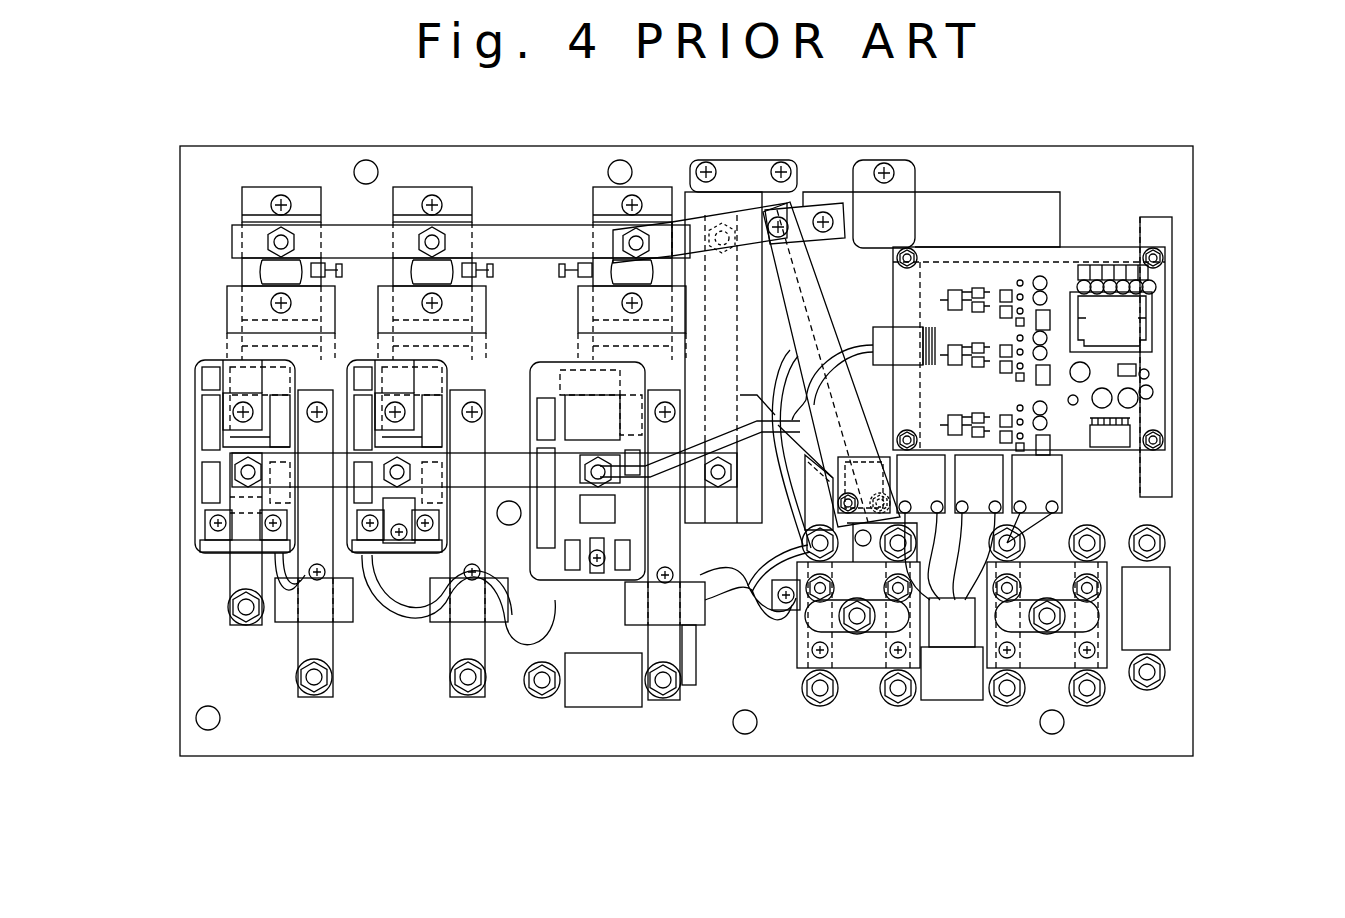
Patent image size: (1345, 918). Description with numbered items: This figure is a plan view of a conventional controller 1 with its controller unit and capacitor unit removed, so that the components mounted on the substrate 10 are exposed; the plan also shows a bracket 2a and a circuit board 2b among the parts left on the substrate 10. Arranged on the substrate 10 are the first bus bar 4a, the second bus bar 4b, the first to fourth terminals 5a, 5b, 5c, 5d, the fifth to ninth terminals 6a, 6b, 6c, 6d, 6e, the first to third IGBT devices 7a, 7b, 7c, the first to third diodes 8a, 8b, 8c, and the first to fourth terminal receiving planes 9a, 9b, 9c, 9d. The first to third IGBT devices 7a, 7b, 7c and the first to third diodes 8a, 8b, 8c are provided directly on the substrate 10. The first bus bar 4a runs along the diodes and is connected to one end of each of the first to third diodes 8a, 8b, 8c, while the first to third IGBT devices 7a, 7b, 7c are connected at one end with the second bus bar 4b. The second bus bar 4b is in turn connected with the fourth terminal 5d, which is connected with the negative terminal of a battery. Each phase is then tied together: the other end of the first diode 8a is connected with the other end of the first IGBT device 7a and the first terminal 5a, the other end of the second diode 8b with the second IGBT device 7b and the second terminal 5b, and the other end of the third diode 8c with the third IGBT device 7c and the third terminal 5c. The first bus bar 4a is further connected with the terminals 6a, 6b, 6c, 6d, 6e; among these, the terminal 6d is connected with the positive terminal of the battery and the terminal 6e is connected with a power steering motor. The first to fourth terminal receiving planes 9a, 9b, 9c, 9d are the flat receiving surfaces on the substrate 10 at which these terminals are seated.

The power distribution unit 1 is at (1240, 298).
The substrate 10 is at (1085, 178).
The mounting bracket 2a is at (877, 274).
The printed circuit board 2b is at (1095, 353).
The first bus bar 4a is at (235, 248).
The second bus bar 4b is at (236, 478).
The first terminal 5a is at (314, 697).
The second terminal 5b is at (468, 697).
The third terminal 5c is at (542, 700).
The fourth terminal 5d is at (247, 625).
The fifth terminal 6a is at (820, 700).
The sixth terminal 6b is at (898, 700).
The seventh terminal 6c is at (1007, 700).
The seventh terminal 6d is at (1087, 700).
The eighth terminal 6e is at (1160, 668).
The first IGBT device 7a is at (200, 536).
The second IGBT device 7b is at (362, 548).
The third IGBT device 7c is at (560, 563).
The first diode 8a is at (300, 186).
The second diode 8b is at (452, 190).
The third diode 8c is at (652, 195).
The first terminal receiving plane 9a is at (808, 668).
The second terminal receiving plane 9b is at (903, 668).
The third terminal receiving plane 9c is at (1010, 668).
The fourth terminal receiving plane 9d is at (1093, 668).